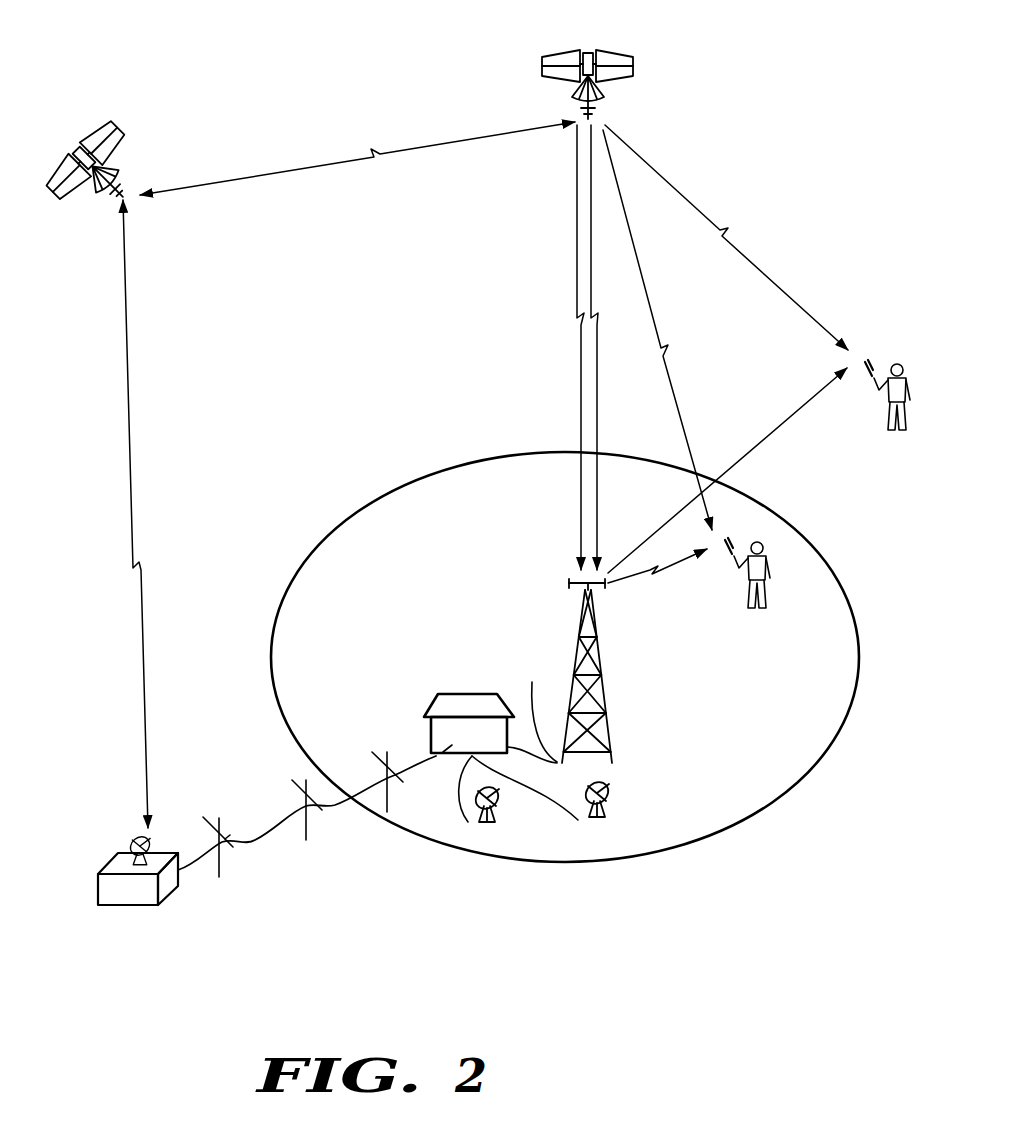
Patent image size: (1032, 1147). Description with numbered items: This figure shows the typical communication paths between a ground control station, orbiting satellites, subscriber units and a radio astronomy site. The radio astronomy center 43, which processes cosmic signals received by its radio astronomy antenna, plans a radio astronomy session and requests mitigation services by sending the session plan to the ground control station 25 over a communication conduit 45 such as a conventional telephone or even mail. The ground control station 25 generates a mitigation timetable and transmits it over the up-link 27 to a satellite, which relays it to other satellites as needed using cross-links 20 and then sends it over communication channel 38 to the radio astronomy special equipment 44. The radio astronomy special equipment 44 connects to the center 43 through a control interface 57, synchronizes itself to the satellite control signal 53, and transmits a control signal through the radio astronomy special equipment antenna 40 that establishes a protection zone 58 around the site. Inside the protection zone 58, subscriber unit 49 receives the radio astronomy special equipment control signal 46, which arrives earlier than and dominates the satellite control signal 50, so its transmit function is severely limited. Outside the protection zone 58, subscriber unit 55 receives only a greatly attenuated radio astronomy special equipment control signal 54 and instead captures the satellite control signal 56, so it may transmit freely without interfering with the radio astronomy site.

The cross-link 20 is at (406, 146).
The ground control station 25 is at (122, 907).
The up-link 27 is at (146, 412).
The communication channel 38 is at (600, 521).
The radio astronomy special equipment antenna 40 is at (575, 598).
The radio astronomy center 43 is at (430, 706).
The radio astronomy special equipment 44 is at (612, 730).
The communication conduit 45 is at (342, 812).
The radio astronomy special equipment control signal 46 is at (645, 578).
The subscriber unit 49 is at (742, 536).
The satellite control signal 50 is at (660, 314).
The satellite control signal 53 is at (578, 522).
The radio astronomy special equipment control signal 54 is at (806, 405).
The subscriber unit 55 is at (868, 360).
The satellite control signal 56 is at (712, 213).
The control interface 57 is at (532, 710).
The protection zone 58 is at (757, 800).